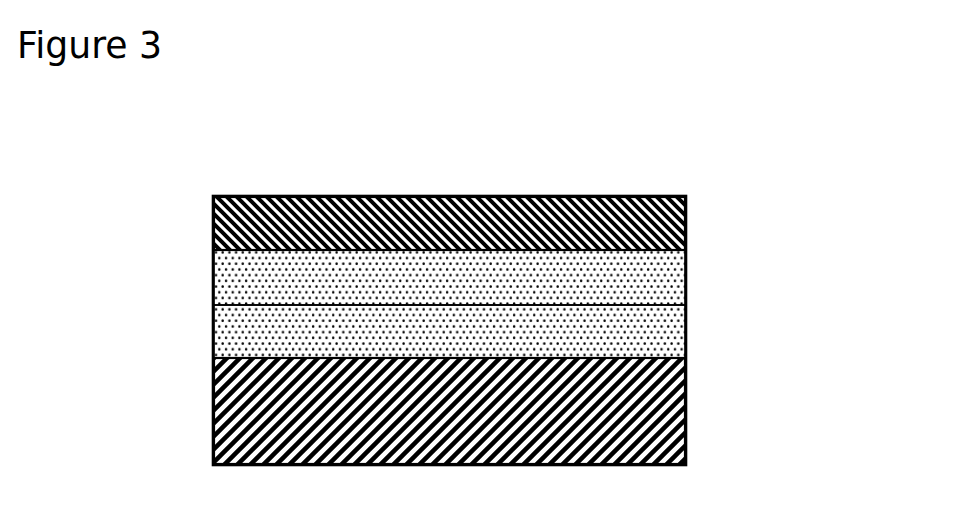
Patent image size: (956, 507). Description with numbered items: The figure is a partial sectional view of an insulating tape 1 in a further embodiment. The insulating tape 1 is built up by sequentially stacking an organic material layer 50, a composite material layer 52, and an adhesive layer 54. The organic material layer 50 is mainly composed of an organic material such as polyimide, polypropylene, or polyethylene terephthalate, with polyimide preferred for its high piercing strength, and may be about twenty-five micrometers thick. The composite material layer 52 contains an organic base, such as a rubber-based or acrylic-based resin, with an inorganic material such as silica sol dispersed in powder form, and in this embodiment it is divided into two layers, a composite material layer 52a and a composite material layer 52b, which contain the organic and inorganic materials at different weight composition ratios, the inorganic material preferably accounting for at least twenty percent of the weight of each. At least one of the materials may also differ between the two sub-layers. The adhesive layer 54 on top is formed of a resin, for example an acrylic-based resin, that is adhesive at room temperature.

The insulating tape 1 is at (652, 173).
The organic material layer 50 is at (686, 412).
The composite material layer 52 is at (551, 298).
The composite material layer 52a is at (686, 340).
The composite material layer 52b is at (686, 293).
The adhesive layer 54 is at (686, 227).